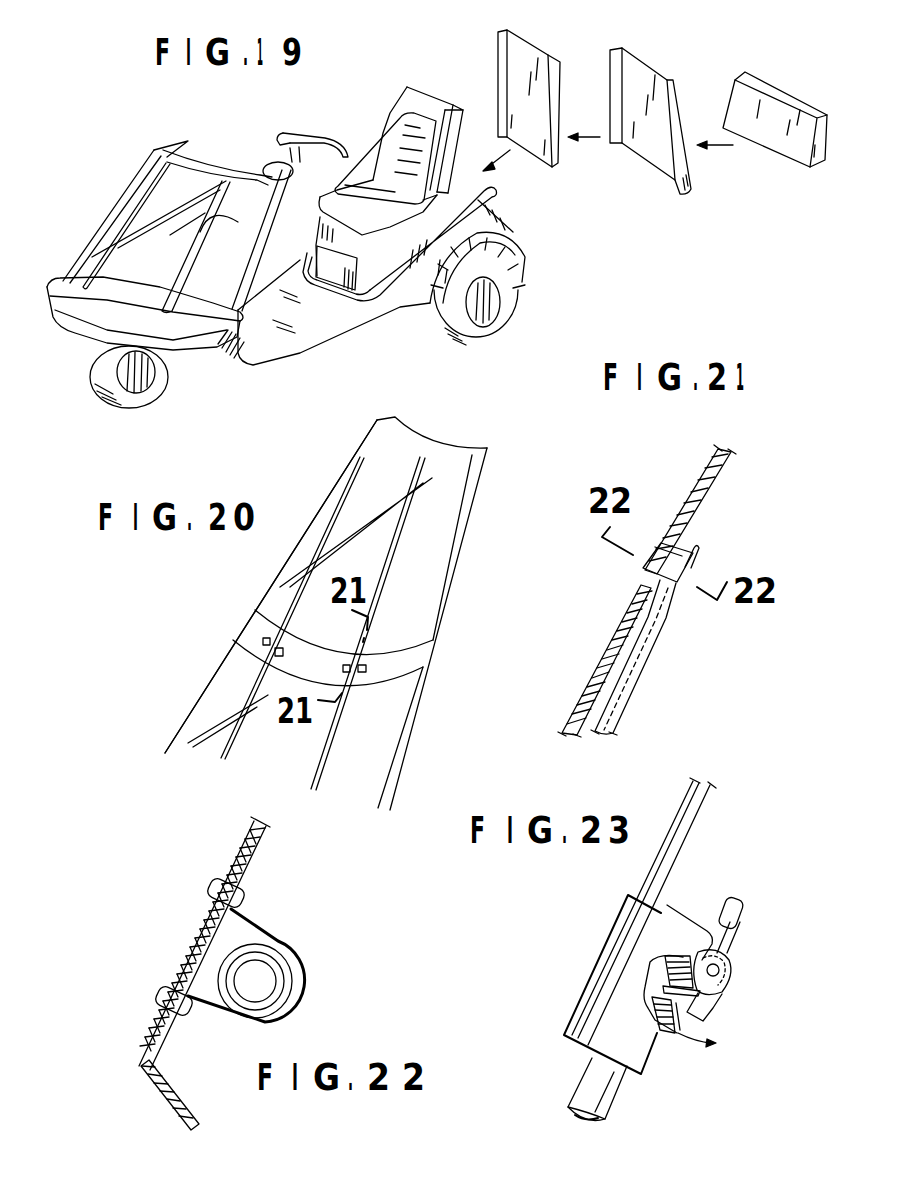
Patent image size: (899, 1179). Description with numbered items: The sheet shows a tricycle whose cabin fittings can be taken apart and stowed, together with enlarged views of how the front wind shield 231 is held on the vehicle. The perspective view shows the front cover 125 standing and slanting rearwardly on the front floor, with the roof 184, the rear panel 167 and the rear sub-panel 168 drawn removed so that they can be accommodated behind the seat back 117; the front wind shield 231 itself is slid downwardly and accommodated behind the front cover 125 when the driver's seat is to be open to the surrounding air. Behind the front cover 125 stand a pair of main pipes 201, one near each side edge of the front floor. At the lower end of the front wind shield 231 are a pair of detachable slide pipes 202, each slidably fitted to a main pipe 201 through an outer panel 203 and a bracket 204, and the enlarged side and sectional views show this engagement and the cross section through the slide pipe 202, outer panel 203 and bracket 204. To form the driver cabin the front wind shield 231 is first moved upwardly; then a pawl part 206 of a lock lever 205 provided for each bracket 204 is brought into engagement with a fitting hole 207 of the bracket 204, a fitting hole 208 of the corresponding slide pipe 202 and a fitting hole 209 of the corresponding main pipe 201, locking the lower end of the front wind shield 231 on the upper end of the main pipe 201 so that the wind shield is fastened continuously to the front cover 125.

In FIG. 19, the seat back 117 is at (397, 135).
In FIG. 19, the front cover 125 is at (127, 185).
In FIG. 20, the front cover 125 is at (190, 710).
In FIG. 21, the front cover 125 is at (578, 700).
In FIG. 19, the roof 184 is at (527, 45).
In FIG. 19, the rear panel 167 is at (637, 53).
In FIG. 19, the rear sub-panel 168 is at (767, 73).
In FIG. 20, the front wind shield 231 is at (340, 478).
In FIG. 21, the front wind shield 231 is at (700, 472).
In FIG. 22, the front wind shield 231 is at (175, 1092).
In FIG. 23, the front wind shield 231 is at (697, 808).
In FIG. 20, the main pipe 201 is at (253, 687).
In FIG. 21, the main pipe 201 is at (625, 698).
In FIG. 22, the main pipe 201 is at (263, 965).
In FIG. 23, the main pipe 201 is at (573, 1093).
In FIG. 22, the slide pipe 202 is at (282, 965).
In FIG. 22, the outer panel 203 is at (195, 927).
In FIG. 23, the outer panel 203 is at (610, 930).
In FIG. 22, the bracket 204 is at (287, 1003).
In FIG. 23, the bracket 204 is at (665, 933).
In FIG. 23, the lock lever 205 is at (742, 917).
In FIG. 23, the pawl part 206 is at (713, 1015).
In FIG. 23, the fitting hole 207 is at (667, 1003).
In FIG. 23, the fitting hole 208 is at (697, 1000).
In FIG. 23, the fitting hole 209 is at (660, 990).